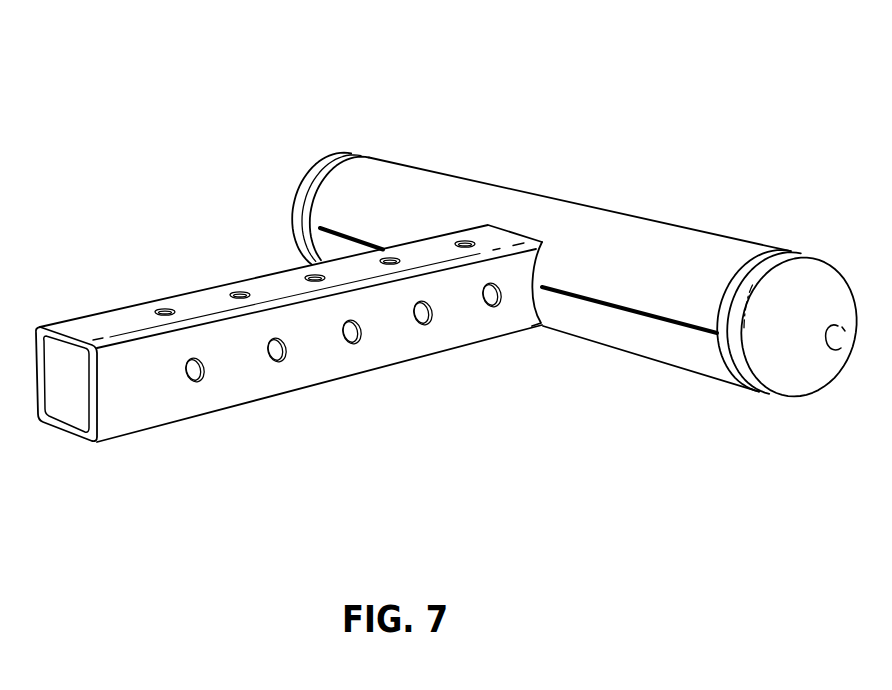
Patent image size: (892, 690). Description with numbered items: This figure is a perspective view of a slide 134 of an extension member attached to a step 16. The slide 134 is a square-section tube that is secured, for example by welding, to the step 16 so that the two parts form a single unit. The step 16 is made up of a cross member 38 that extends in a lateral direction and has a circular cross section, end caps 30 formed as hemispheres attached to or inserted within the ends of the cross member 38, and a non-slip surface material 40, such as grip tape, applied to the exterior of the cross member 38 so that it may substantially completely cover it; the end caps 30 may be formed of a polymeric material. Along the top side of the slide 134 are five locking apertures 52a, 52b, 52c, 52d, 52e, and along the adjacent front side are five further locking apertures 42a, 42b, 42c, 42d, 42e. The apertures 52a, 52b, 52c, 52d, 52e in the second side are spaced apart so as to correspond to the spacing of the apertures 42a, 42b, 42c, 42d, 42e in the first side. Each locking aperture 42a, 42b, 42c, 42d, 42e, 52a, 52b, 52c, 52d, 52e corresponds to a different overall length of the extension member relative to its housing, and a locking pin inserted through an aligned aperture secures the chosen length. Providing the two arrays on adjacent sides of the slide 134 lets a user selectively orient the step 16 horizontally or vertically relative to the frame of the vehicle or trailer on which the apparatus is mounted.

The step 16 is at (432, 238).
The end caps 30 is at (297, 192).
The cross member 38 is at (343, 157).
The non-slip surface material 40 is at (608, 233).
The slide 134 is at (110, 320).
The locking aperture 52a is at (240, 291).
The locking aperture 52b is at (315, 274).
The locking aperture 52c is at (388, 258).
The locking aperture 52d is at (463, 242).
The locking aperture 52e is at (165, 308).
The locking aperture 42a is at (277, 362).
The locking aperture 42b is at (352, 344).
The locking aperture 42c is at (423, 325).
The locking aperture 42d is at (492, 307).
The locking aperture 42e is at (195, 382).